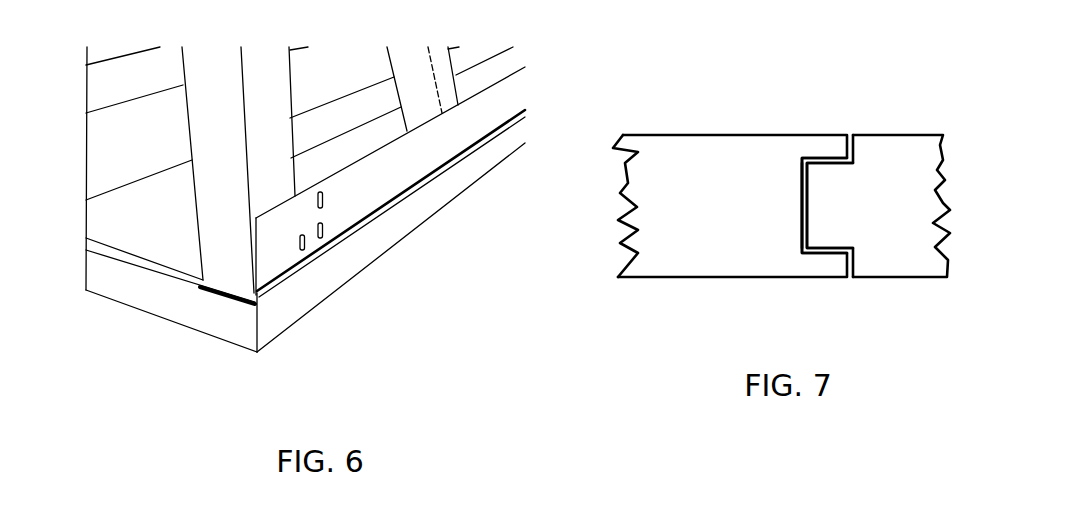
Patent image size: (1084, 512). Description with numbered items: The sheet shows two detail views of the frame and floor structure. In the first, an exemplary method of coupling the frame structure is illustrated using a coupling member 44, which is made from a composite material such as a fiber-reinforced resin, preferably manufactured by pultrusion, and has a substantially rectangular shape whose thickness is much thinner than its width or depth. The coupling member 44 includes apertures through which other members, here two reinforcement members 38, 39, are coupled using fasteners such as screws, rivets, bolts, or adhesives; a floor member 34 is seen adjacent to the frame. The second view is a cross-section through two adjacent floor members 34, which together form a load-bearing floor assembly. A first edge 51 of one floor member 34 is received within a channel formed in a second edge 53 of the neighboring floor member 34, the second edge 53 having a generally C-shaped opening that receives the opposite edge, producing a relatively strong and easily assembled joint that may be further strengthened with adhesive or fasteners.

In FIG. 6, the floor member 34 is at (103, 275).
In FIG. 7, the floor member 34 is at (665, 153).
In FIG. 6, the reinforcement member 38 is at (227, 212).
In FIG. 6, the reinforcement member 39 is at (430, 87).
In FIG. 6, the coupling member 44 is at (352, 188).
In FIG. 7, the first edge 51 is at (807, 210).
In FIG. 7, the second edge 53 is at (802, 193).